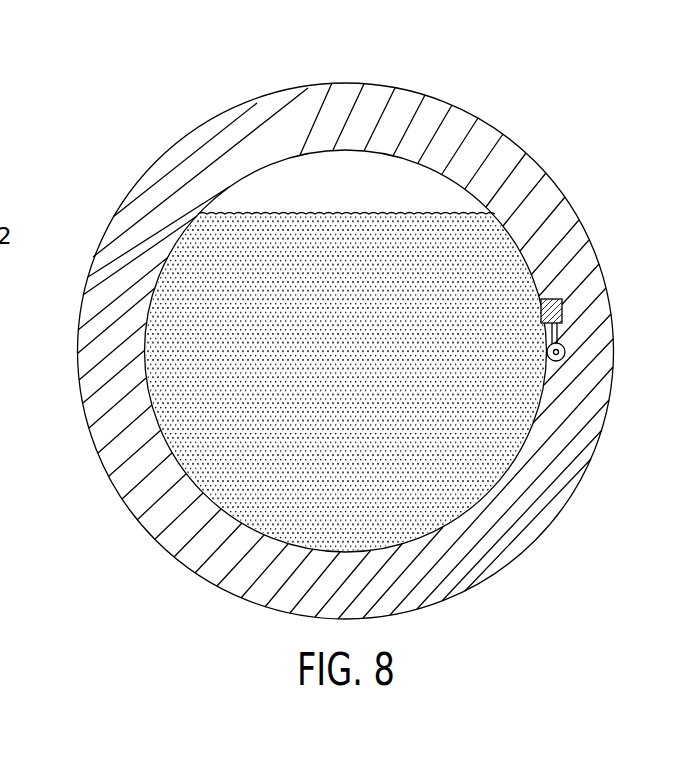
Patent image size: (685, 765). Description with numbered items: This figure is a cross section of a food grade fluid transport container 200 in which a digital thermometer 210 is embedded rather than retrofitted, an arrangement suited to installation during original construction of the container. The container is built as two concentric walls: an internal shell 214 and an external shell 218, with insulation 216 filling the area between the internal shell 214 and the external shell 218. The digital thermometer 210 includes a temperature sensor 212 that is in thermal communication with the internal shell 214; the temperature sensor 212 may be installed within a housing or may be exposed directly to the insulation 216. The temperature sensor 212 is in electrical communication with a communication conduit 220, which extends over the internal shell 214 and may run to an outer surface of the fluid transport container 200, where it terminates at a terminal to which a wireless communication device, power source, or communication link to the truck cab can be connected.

The fluid transport container 200 is at (368, 332).
The digital thermometer 210 is at (599, 306).
The temperature sensor 212 is at (588, 297).
The internal shell 214 is at (530, 437).
The insulation 216 is at (492, 530).
The external shell 218 is at (497, 127).
The communication conduit 220 is at (565, 356).